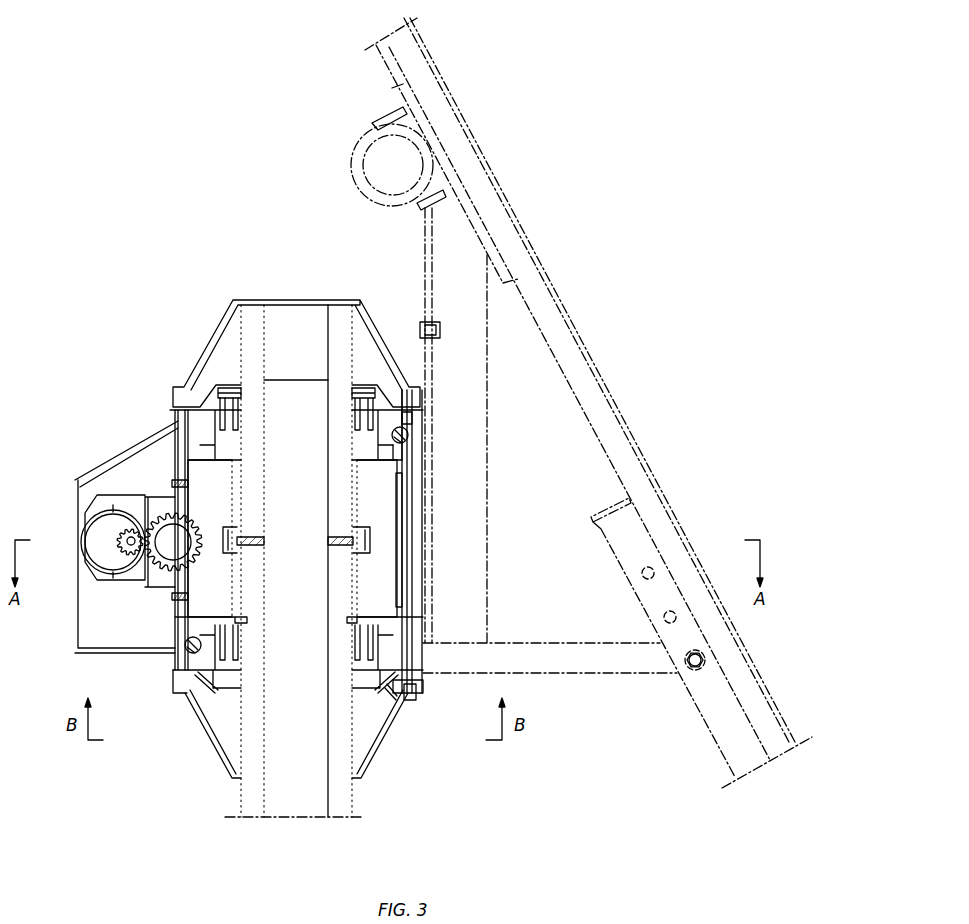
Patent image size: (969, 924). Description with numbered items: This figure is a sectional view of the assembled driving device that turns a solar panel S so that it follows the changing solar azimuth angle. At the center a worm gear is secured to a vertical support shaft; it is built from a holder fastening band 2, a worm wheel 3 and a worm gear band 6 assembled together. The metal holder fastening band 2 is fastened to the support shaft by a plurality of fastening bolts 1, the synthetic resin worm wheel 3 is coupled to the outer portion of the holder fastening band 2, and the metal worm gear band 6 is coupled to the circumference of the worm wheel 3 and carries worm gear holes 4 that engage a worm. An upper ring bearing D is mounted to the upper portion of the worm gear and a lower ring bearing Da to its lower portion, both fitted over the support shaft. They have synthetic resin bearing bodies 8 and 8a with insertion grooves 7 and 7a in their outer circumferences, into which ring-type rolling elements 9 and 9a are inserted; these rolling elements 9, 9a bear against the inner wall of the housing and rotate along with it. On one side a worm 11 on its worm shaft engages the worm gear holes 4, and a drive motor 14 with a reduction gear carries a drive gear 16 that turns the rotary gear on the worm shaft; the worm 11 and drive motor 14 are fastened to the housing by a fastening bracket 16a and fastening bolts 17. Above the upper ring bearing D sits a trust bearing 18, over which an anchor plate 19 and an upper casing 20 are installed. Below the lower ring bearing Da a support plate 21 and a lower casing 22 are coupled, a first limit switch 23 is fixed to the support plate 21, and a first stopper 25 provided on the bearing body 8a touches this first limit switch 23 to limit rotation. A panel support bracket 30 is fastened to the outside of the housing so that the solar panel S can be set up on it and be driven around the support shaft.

The fastening bolts 1 is at (322, 536).
The holder fastening band 2 is at (355, 578).
The worm wheel 3 is at (220, 480).
The worm gear holes 4 is at (402, 543).
The worm gear band 6 is at (404, 488).
The insertion groove 7 is at (400, 455).
The bearing body 8 is at (392, 413).
The rolling element 9 is at (408, 435).
The worm 11 is at (158, 561).
The drive motor 14 is at (92, 553).
The drive gear 16 is at (92, 535).
The fastening bracket 16a is at (170, 467).
The fastening bolts 17 is at (172, 482).
The trust bearing 18 is at (217, 387).
The anchor plate 19 is at (208, 397).
The upper casing 20 is at (233, 305).
The support plate 21 is at (423, 690).
The lower casing 22 is at (398, 702).
The first limit switch 23 is at (410, 698).
The first stopper 25 is at (382, 727).
The panel support bracket 30 is at (478, 355).
The insertion groove 7a is at (213, 668).
The bearing body 8a is at (246, 698).
The rolling element 9a is at (188, 650).
The upper ring bearing D is at (412, 418).
The lower ring bearing Da is at (186, 695).
The solar panel S is at (533, 255).